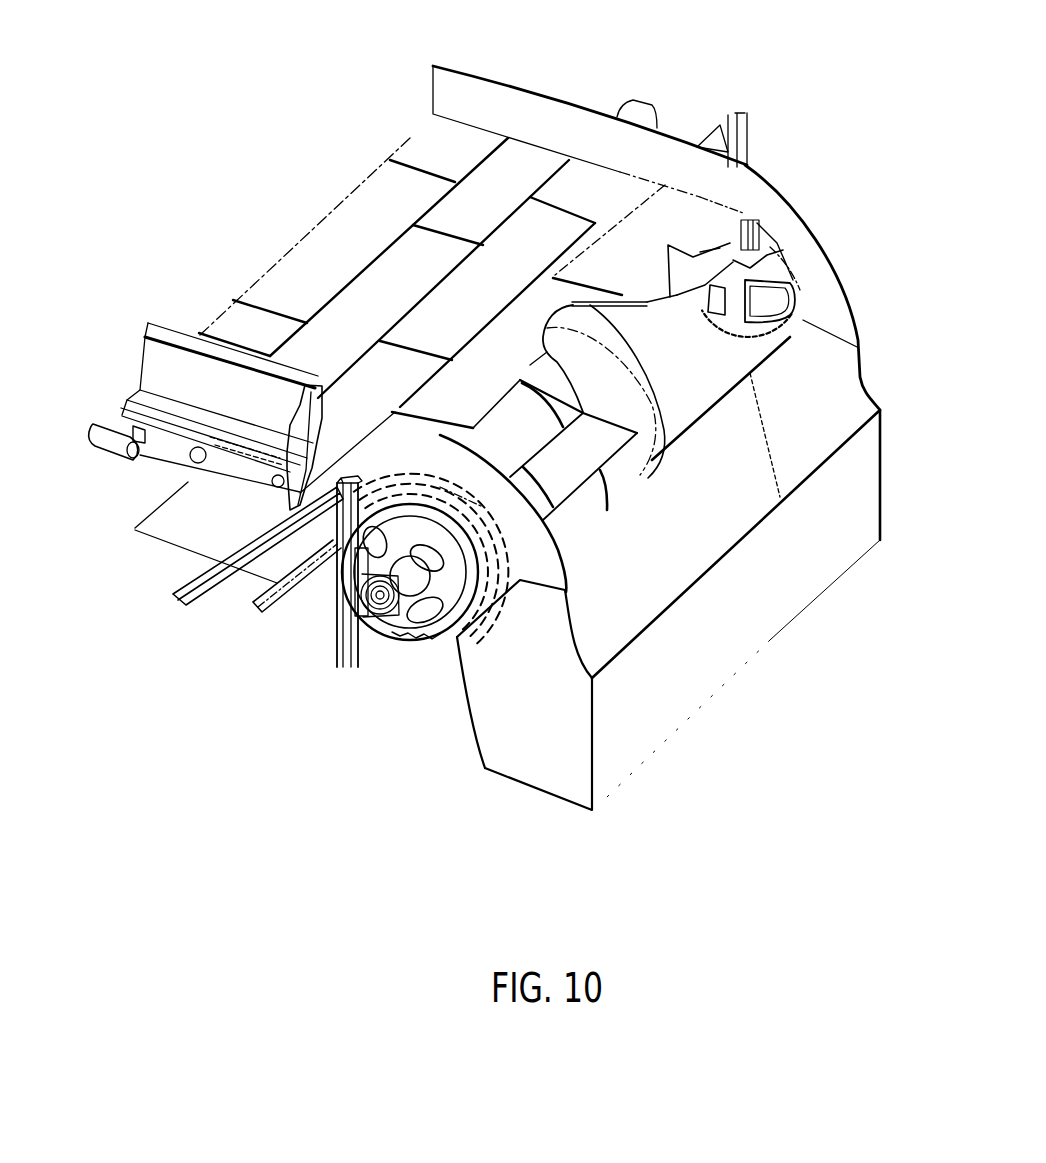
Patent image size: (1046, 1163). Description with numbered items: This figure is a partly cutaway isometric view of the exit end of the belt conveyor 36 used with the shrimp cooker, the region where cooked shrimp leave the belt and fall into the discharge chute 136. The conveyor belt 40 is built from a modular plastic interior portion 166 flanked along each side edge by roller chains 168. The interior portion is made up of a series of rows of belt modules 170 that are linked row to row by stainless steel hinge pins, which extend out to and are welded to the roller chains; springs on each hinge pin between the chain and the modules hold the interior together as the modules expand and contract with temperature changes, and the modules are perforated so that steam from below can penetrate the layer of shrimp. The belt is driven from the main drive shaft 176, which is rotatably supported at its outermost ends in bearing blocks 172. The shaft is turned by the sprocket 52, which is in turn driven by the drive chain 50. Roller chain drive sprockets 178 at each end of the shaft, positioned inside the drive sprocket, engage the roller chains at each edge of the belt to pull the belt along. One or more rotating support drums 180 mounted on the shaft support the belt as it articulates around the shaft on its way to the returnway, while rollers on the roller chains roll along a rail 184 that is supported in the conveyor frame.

The conveyor 36 is at (566, 28).
The conveyor belt 40 is at (362, 202).
The drive chain 50 is at (440, 650).
The sprocket 52 is at (393, 637).
The discharge chute 136 is at (553, 779).
The modular plastic interior portion 166 is at (540, 160).
The roller chains 168 is at (195, 414).
The belt modules 170 is at (335, 330).
The bearing blocks 172 is at (378, 560).
The main drive shaft 176 is at (661, 341).
The roller chain drive sprockets 178 is at (797, 292).
The rotating support drums 180 is at (582, 334).
The rail 184 is at (112, 421).